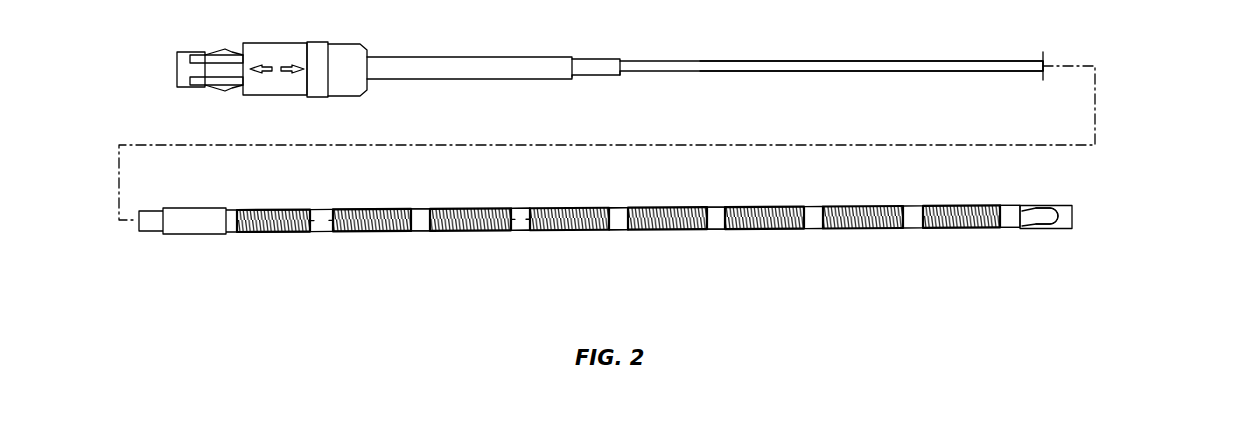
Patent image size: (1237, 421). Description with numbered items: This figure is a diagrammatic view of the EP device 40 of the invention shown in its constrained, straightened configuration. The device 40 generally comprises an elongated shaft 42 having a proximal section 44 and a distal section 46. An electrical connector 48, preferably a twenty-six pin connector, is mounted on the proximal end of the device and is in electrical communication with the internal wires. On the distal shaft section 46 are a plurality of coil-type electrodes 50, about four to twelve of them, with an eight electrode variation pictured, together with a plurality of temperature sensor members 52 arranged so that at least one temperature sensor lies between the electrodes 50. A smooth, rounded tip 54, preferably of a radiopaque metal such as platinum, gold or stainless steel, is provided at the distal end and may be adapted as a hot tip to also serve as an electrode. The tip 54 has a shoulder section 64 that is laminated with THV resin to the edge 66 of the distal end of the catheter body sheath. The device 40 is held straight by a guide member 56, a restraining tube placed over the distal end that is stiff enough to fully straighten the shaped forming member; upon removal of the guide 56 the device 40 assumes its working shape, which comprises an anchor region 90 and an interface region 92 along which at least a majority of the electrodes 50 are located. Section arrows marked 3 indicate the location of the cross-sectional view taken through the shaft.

The EP device 40 is at (1152, 106).
The elongated shaft 42 is at (935, 59).
The proximal section 44 is at (497, 36).
The distal section 46 is at (721, 242).
The electrical connector 48 is at (270, 44).
The electrodes 50 is at (275, 232).
The temperature sensor members 52 is at (424, 232).
The tip 54 is at (1040, 218).
The guide member 56 is at (1068, 205).
The shoulder section 64 is at (1040, 207).
The edge 66 is at (1008, 225).
The anchor region 90 is at (883, 262).
The interface region 92 is at (613, 240).
The section line 3 is at (291, 208).